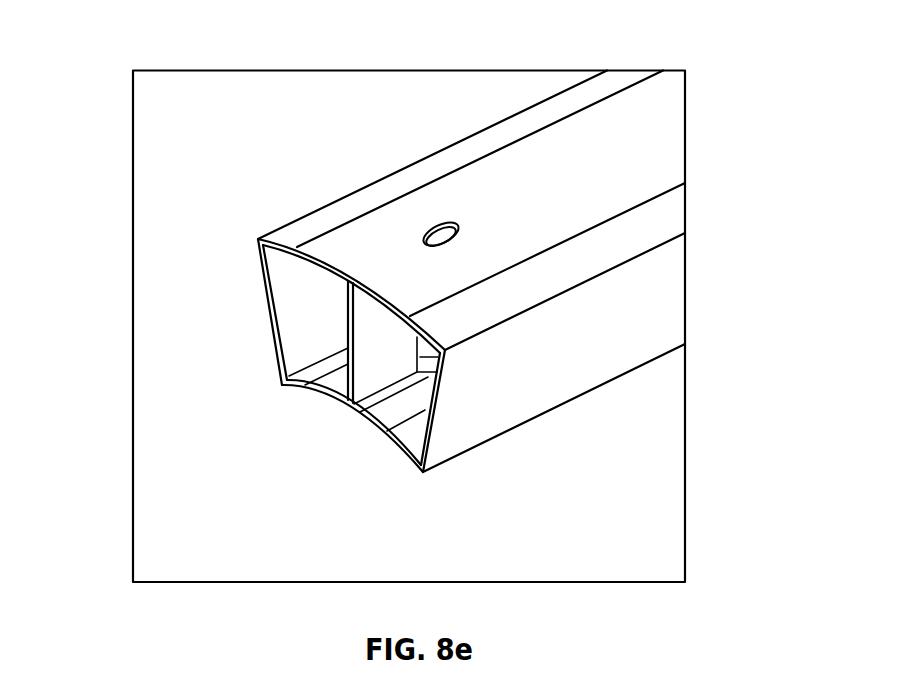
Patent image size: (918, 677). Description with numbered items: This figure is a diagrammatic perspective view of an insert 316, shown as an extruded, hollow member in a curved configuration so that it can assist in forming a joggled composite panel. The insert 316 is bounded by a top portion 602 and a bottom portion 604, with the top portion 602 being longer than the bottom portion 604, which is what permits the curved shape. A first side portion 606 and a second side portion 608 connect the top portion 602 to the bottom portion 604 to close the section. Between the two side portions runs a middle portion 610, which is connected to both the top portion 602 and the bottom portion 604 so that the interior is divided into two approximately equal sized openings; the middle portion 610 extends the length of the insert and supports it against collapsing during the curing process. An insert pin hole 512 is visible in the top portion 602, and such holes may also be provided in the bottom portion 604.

The insert 316 is at (381, 48).
The top portion 602 is at (555, 192).
The bottom portion 604 is at (335, 402).
The first side portion 606 is at (265, 312).
The second side portion 608 is at (447, 363).
The middle portion 610 is at (373, 362).
The insert pin hole 512 is at (433, 238).